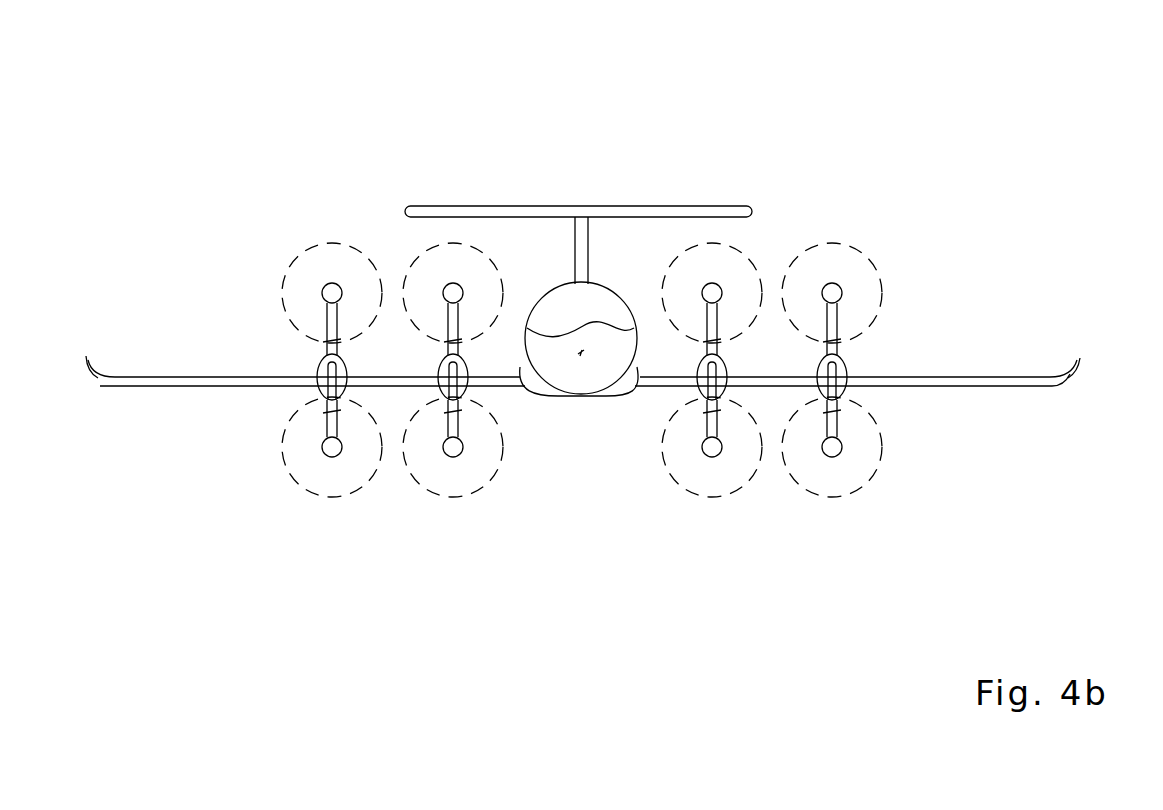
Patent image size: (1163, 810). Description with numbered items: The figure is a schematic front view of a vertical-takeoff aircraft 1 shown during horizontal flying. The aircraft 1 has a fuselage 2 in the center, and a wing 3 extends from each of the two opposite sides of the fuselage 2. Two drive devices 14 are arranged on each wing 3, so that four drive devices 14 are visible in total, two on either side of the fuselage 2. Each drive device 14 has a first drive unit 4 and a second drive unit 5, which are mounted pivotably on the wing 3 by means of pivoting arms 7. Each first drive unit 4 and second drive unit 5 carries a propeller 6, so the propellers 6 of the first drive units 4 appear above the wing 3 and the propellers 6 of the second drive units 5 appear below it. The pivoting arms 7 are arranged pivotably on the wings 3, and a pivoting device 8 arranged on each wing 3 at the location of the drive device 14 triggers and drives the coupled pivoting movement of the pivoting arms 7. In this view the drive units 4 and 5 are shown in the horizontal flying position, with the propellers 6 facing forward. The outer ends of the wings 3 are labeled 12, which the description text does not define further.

The vertical-takeoff aircraft 1 is at (1016, 189).
The fuselage 2 is at (583, 382).
The wing 3 is at (215, 388).
The first drive unit 4 is at (1010, 268).
The second drive unit 5 is at (266, 464).
The propeller 6 is at (302, 258).
The pivoting arm 7 is at (327, 323).
The pivoting device 8 is at (440, 358).
The wing tip 12 is at (92, 386).
The drive device 14 is at (308, 512).